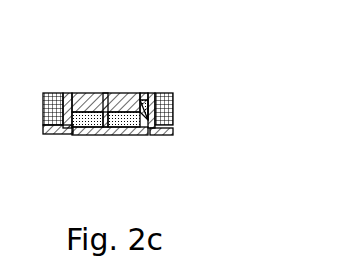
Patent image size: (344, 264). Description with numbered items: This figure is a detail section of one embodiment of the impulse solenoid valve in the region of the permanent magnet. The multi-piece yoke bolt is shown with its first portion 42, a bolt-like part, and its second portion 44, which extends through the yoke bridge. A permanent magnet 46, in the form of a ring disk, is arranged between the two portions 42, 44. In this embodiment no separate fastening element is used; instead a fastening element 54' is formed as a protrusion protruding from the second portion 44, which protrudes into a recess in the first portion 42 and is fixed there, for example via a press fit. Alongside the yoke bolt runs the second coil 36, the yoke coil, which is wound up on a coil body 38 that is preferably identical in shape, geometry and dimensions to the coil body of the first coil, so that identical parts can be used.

The second coil 36 is at (177, 98).
The coil body 38 is at (177, 122).
The first portion 42 is at (104, 112).
The second portion 44 is at (94, 134).
The permanent magnet 46 is at (64, 92).
The fastening element 54' is at (110, 88).